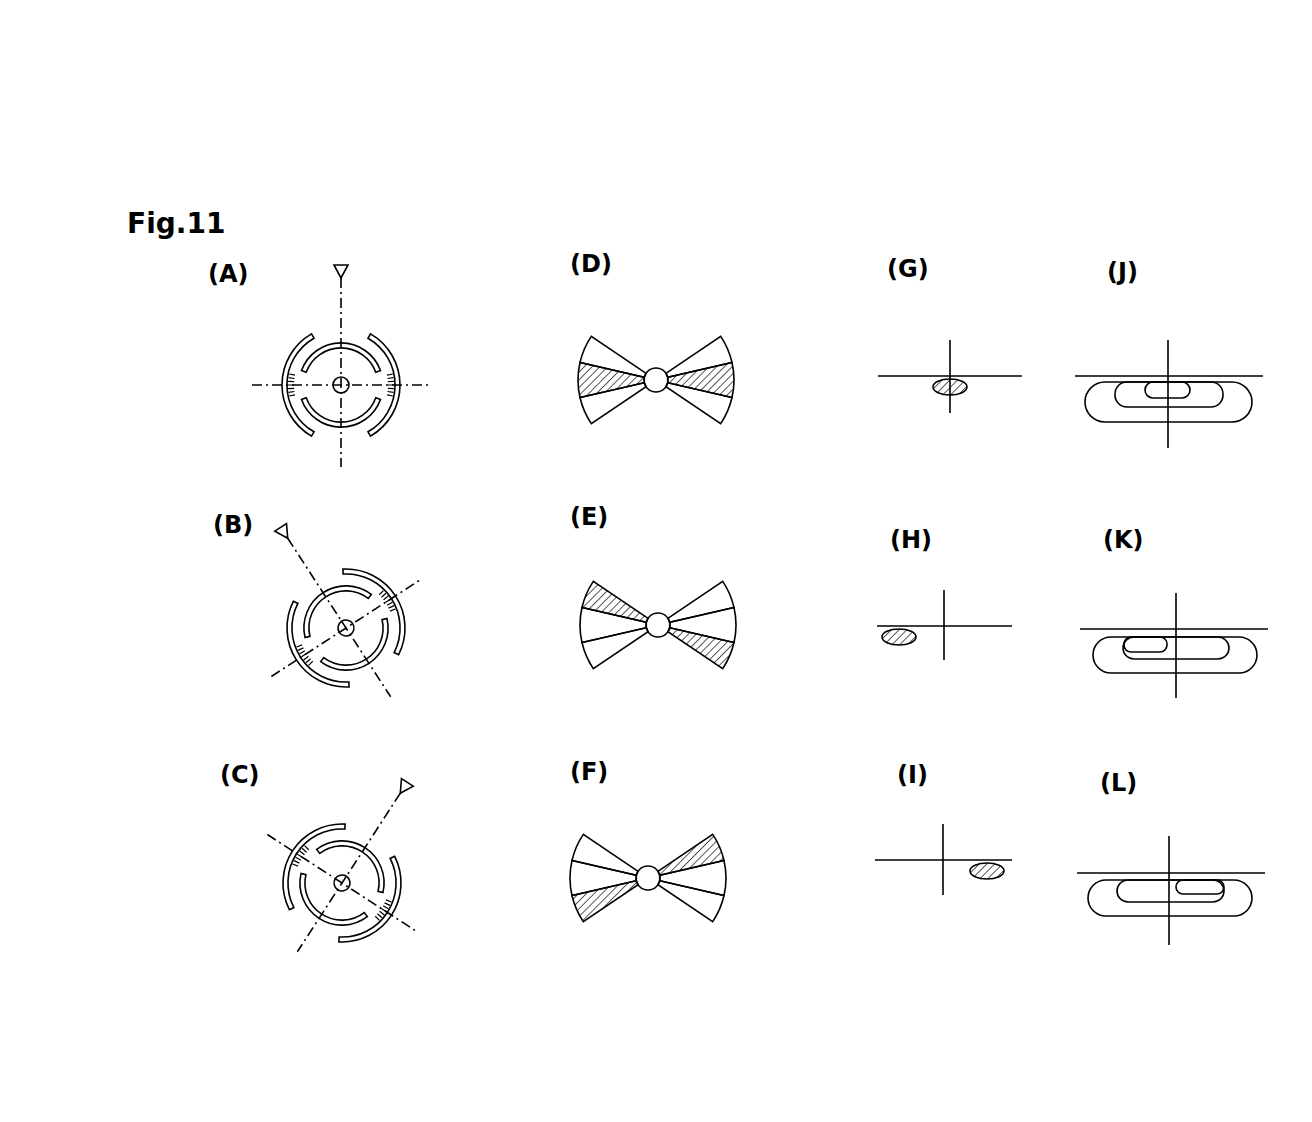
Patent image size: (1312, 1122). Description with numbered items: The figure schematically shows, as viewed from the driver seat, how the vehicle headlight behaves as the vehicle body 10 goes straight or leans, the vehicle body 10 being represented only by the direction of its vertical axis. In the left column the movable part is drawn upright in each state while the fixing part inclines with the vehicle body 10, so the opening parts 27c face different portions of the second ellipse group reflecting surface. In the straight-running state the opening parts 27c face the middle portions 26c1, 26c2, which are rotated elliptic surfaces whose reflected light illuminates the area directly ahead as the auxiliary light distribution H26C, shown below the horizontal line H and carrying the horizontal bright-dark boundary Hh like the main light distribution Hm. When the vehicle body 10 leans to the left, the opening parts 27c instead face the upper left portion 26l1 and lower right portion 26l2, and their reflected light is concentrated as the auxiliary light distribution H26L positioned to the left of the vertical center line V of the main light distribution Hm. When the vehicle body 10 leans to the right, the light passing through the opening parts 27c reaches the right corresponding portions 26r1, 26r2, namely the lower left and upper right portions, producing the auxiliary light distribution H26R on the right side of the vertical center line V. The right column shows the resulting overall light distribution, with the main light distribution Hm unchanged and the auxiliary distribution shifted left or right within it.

The vehicle body 10 is at (348, 266).
The opening part 27c is at (307, 382).
The upper left portion 26l1 is at (590, 350).
The middle portion 26c1 is at (580, 373).
The right corresponding portion 26r1 is at (592, 410).
The right corresponding portion 26r2 is at (710, 353).
The middle portion 26c2 is at (736, 376).
The lower right portion 26l2 is at (712, 407).
The auxiliary light distribution H26C is at (966, 389).
The auxiliary light distribution H26L is at (903, 645).
The auxiliary light distribution H26R is at (985, 879).
The horizontal line H is at (1186, 627).
The vertical center line V is at (1174, 659).
The horizontal bright-dark boundary Hh is at (1128, 385).
The main light distribution Hm is at (1215, 413).